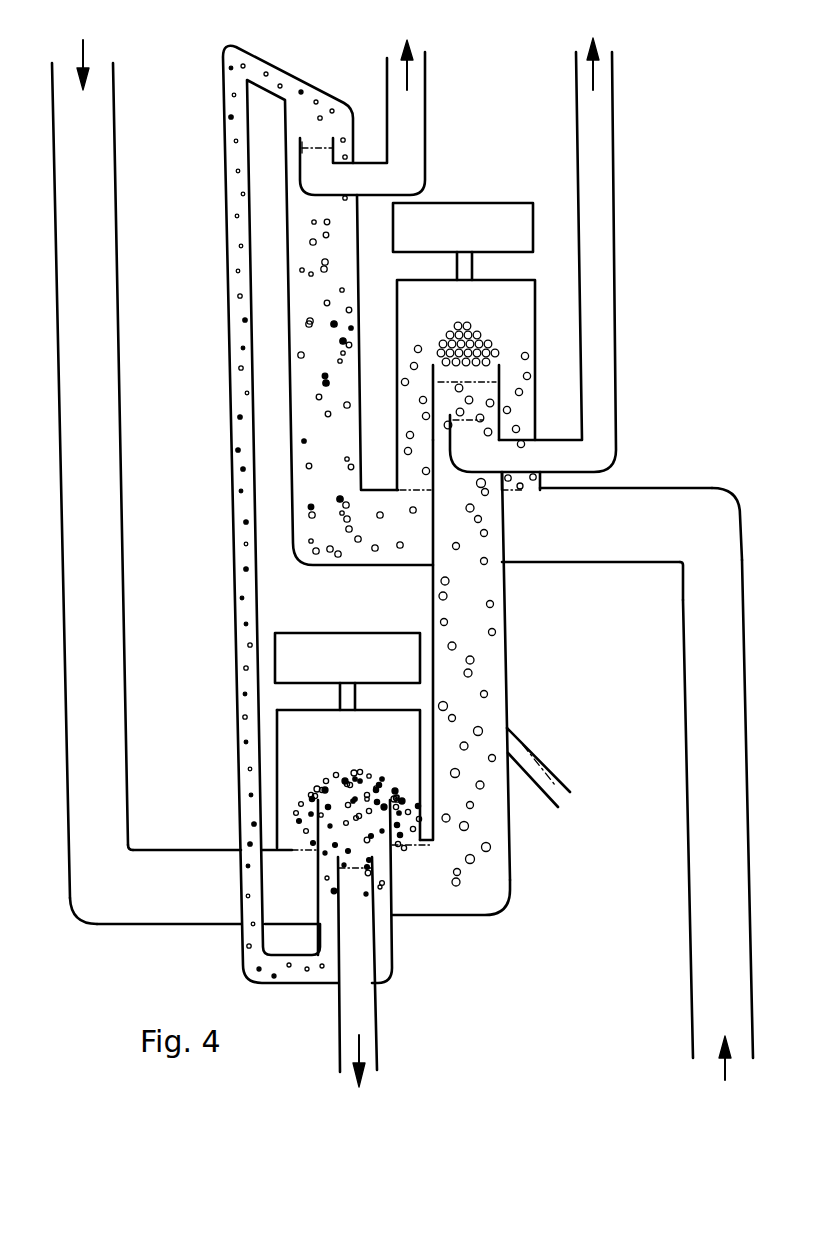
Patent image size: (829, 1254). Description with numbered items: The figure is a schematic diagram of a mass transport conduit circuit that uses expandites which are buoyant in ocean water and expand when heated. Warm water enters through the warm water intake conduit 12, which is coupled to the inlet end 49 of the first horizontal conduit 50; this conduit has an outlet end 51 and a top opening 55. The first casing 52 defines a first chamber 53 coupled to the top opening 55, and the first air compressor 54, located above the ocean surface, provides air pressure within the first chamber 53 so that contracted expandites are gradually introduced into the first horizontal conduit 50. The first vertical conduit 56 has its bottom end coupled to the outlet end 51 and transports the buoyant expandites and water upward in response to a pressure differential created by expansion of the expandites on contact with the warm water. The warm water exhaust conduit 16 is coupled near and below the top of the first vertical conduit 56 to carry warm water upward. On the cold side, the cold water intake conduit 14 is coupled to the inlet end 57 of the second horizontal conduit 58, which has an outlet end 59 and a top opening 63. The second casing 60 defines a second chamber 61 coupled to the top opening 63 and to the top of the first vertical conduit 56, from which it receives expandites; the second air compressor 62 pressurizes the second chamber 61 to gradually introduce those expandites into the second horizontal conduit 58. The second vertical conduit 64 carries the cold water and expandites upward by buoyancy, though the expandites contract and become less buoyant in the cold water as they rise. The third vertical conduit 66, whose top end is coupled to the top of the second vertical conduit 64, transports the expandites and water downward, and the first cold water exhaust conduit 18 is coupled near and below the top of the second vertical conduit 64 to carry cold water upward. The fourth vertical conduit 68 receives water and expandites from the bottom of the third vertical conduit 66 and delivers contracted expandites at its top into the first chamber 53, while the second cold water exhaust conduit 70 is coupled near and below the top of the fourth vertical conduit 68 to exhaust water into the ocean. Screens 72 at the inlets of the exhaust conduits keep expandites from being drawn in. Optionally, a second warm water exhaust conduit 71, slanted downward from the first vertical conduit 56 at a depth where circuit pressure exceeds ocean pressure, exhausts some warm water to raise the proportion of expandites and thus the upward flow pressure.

The warm water intake conduit 12 is at (114, 127).
The cold water intake conduit 14 is at (690, 918).
The warm water exhaust conduit 16 is at (610, 107).
The first cold water exhaust conduit 18 is at (427, 108).
The inlet end 49 is at (132, 848).
The first horizontal conduit 50 is at (213, 848).
The outlet end 51 is at (467, 917).
The first casing 52 is at (378, 712).
The first chamber 53 is at (308, 730).
The first air compressor 54 is at (352, 633).
The top opening 55 is at (292, 853).
The first vertical conduit 56 is at (506, 650).
The inlet end 57 is at (678, 565).
The second horizontal conduit 58 is at (562, 565).
The outlet end 59 is at (364, 488).
The second casing 60 is at (516, 278).
The second chamber 61 is at (511, 322).
The second air compressor 62 is at (478, 203).
The top opening 63 is at (527, 491).
The second vertical conduit 64 is at (357, 289).
The third vertical conduit 66 is at (226, 283).
The fourth vertical conduit 68 is at (394, 930).
The second cold water exhaust conduit 70 is at (378, 1010).
The second warm water exhaust conduit 71 is at (548, 768).
The screens 72 is at (318, 150).